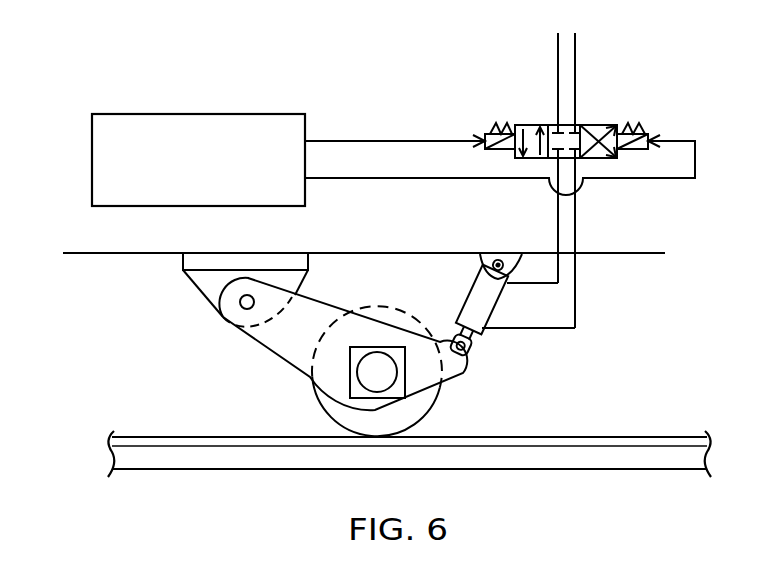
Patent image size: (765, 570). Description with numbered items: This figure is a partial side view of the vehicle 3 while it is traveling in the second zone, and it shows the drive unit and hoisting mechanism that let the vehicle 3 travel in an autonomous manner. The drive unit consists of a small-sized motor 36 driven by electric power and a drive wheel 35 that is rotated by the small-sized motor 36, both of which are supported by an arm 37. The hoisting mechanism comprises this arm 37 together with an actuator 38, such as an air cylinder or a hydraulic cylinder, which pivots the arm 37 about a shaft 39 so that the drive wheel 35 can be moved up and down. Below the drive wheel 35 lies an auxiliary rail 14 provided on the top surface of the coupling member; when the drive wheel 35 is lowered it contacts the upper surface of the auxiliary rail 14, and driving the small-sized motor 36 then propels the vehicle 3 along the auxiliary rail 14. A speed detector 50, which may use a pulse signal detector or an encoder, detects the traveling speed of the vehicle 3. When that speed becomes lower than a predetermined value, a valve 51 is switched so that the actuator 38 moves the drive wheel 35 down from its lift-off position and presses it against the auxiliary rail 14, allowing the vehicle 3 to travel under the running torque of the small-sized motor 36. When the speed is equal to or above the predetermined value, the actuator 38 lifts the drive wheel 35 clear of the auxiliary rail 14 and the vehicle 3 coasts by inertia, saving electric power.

The vehicle 3 is at (160, 223).
The auxiliary rail 14 is at (600, 452).
The drive wheel 35 is at (400, 416).
The small-sized motor 36 is at (370, 368).
The arm 37 is at (283, 332).
The actuator 38 is at (485, 302).
The shaft 39 is at (241, 306).
The speed detector 50 is at (228, 148).
The valve 51 is at (588, 130).